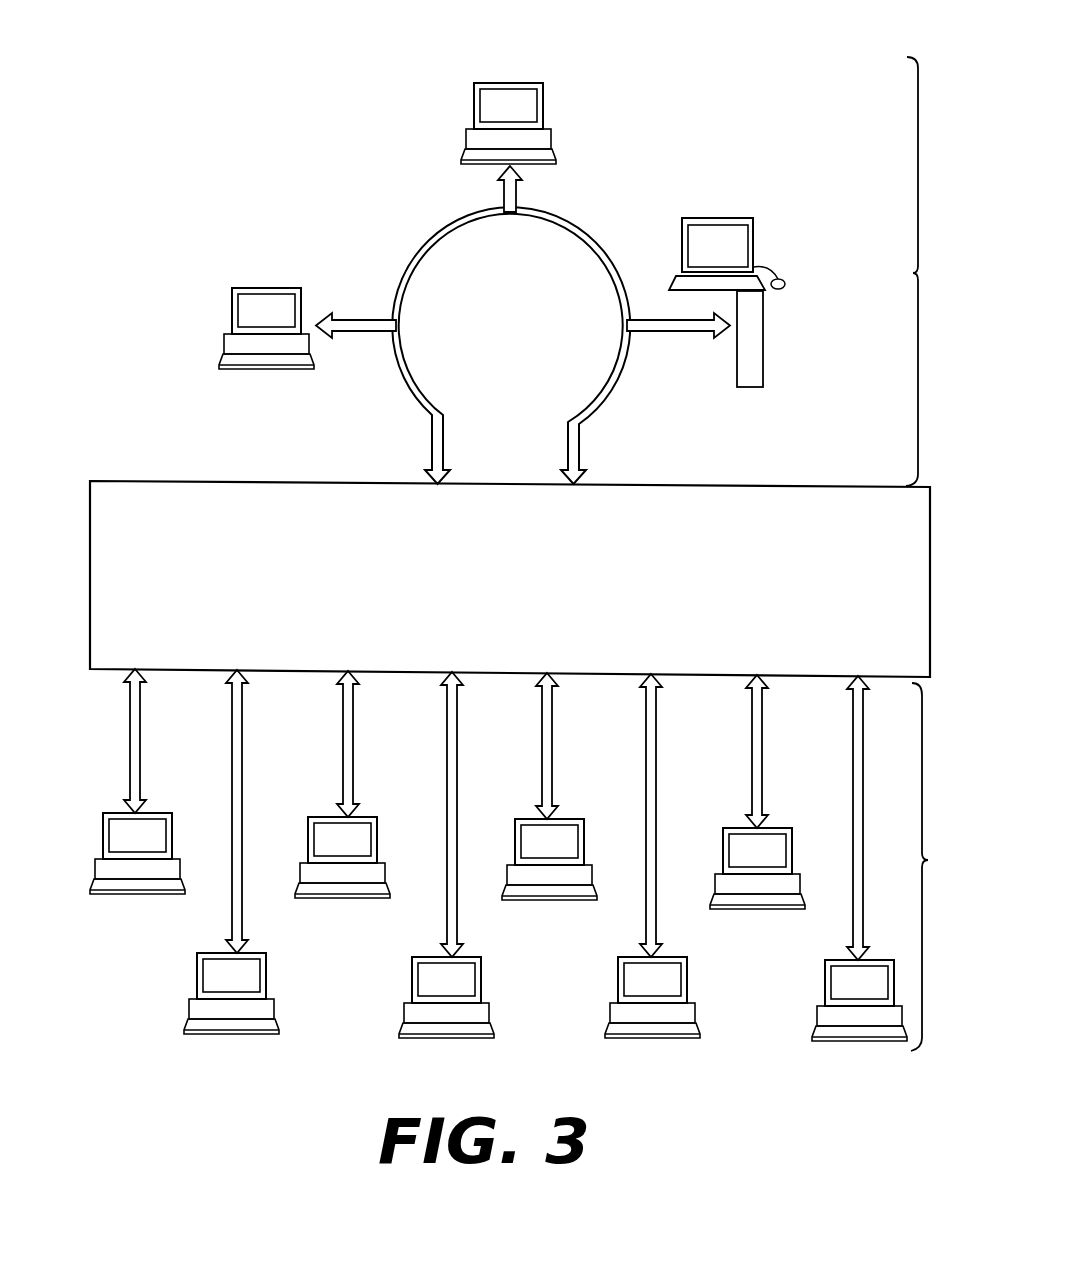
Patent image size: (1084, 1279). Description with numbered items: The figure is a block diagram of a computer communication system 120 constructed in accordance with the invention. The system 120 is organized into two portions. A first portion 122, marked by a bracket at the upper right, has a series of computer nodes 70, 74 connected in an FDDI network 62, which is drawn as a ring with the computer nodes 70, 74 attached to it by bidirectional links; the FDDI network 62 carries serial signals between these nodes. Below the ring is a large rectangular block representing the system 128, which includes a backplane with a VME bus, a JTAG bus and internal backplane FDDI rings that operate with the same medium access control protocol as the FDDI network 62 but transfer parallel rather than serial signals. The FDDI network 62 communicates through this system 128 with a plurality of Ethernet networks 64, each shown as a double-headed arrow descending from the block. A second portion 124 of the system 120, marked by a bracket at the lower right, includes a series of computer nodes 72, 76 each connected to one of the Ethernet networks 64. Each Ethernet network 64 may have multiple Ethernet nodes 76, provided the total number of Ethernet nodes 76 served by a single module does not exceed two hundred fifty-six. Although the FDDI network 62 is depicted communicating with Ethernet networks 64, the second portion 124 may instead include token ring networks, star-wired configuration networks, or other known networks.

The computer communication system 120 is at (213, 300).
The FDDI network 62 is at (858, 256).
The computer node 74 is at (501, 84).
The computer node 70 is at (278, 289).
The first portion 122 is at (932, 271).
The system 128 is at (832, 484).
The Ethernet network 64 is at (141, 748).
The computer node 72 is at (135, 896).
The Ethernet node 76 is at (822, 978).
The second portion 124 is at (936, 867).